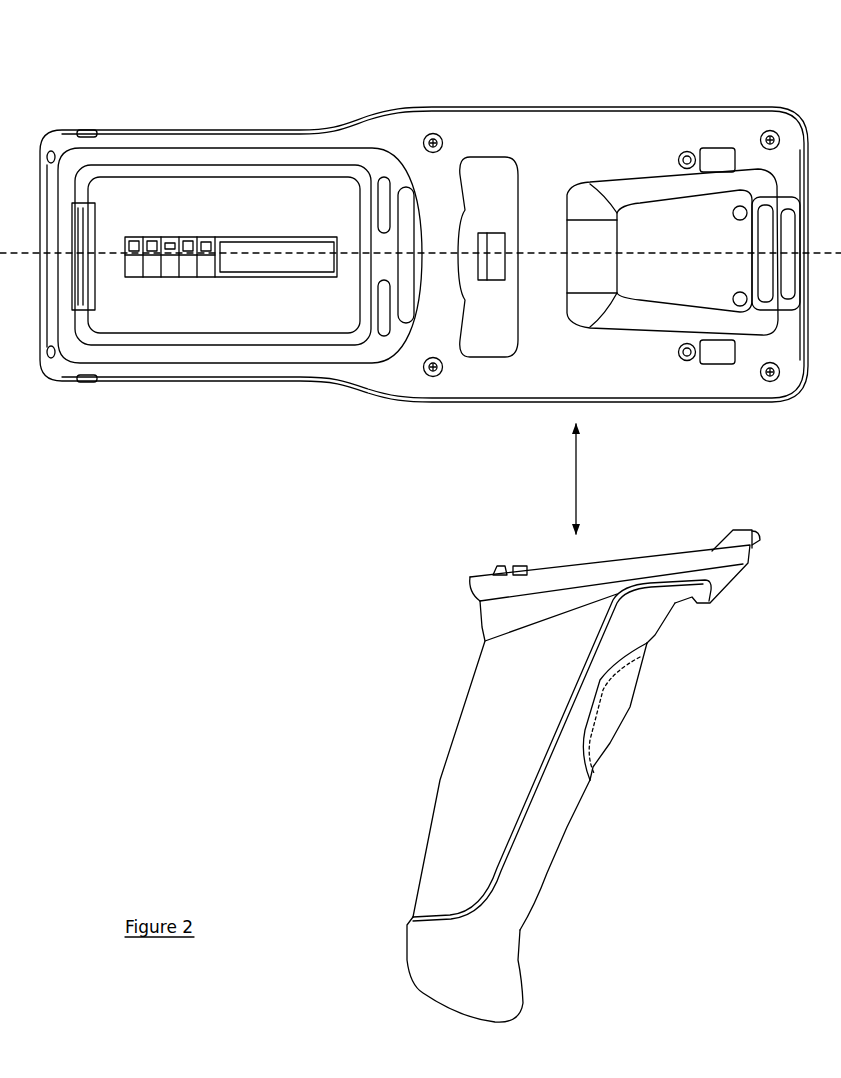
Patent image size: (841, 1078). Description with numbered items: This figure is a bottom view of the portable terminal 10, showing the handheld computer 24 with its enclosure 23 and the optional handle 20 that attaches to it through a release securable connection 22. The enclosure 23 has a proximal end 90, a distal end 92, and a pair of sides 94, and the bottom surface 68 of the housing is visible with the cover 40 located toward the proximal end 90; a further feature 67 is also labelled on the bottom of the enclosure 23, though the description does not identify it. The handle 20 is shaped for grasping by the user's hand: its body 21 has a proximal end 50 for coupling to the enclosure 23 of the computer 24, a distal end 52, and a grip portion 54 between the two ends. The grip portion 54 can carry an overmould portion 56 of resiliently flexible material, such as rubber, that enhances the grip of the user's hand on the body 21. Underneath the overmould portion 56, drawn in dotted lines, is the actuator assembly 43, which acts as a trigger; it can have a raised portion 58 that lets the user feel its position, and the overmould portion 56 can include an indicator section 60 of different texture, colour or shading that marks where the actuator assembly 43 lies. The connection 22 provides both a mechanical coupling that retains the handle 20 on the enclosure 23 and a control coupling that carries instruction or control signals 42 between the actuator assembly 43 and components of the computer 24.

The portable terminal 10 is at (122, 639).
The handle 20 is at (364, 780).
The body 21 is at (415, 863).
The release securable connection 22 is at (576, 473).
The enclosure 23 is at (578, 150).
The handheld computer 24 is at (173, 414).
The cover 40 is at (240, 156).
The instruction/control signals 42 is at (207, 205).
The actuator assembly 43 is at (613, 715).
The proximal end 50 is at (740, 292).
The distal end 52 is at (384, 987).
The grip portion 54 is at (827, 253).
The overmould portion 56 is at (566, 800).
The raised portion 58 is at (630, 710).
The indicator section 60 is at (637, 660).
The strap mount 67 is at (683, 227).
The bottom surface 68 is at (525, 123).
The proximal end 90 is at (40, 374).
The distal end 92 is at (817, 344).
The sides 94 is at (313, 112).